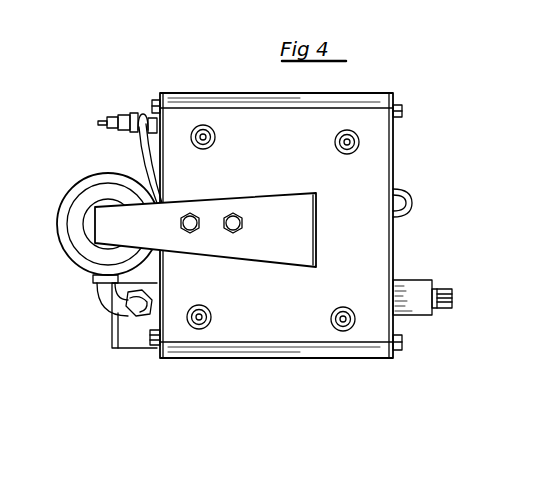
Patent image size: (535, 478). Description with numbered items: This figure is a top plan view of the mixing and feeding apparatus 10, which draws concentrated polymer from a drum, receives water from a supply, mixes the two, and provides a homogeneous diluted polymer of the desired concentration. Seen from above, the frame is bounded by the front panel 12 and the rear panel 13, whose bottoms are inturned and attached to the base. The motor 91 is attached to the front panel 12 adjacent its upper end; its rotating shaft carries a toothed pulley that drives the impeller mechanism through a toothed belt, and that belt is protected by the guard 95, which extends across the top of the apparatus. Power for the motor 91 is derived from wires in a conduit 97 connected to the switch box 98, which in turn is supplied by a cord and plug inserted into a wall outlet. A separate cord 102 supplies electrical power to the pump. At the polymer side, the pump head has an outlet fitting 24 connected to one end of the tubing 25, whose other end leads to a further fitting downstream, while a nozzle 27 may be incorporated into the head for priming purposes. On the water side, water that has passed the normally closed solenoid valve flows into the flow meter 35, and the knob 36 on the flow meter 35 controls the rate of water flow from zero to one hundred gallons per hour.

The mixing and feeding apparatus 10 is at (206, 86).
The front panel 12 is at (156, 103).
The rear panel 13 is at (396, 128).
The outlet fitting 24 is at (122, 131).
The tubing 25 is at (151, 152).
The nozzle 27 is at (113, 118).
The flow meter 35 is at (410, 287).
The knob 36 is at (440, 313).
The motor 91 is at (68, 258).
The guard 95 is at (275, 210).
The conduit 97 is at (97, 292).
The switch box 98 is at (128, 349).
The cord 102 is at (403, 192).